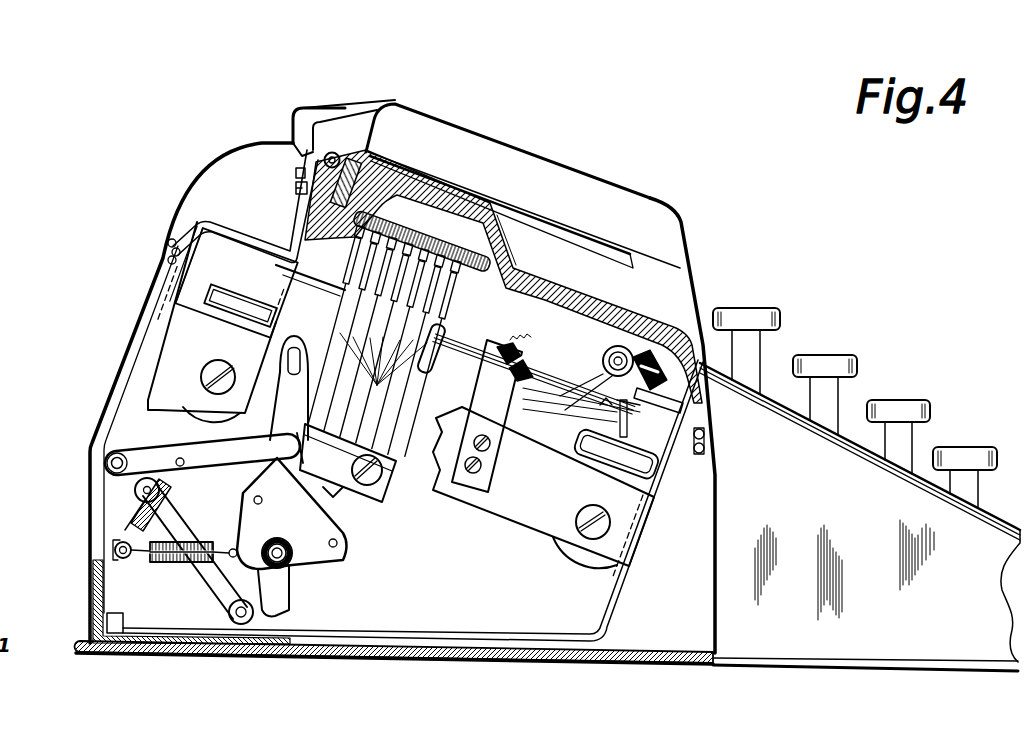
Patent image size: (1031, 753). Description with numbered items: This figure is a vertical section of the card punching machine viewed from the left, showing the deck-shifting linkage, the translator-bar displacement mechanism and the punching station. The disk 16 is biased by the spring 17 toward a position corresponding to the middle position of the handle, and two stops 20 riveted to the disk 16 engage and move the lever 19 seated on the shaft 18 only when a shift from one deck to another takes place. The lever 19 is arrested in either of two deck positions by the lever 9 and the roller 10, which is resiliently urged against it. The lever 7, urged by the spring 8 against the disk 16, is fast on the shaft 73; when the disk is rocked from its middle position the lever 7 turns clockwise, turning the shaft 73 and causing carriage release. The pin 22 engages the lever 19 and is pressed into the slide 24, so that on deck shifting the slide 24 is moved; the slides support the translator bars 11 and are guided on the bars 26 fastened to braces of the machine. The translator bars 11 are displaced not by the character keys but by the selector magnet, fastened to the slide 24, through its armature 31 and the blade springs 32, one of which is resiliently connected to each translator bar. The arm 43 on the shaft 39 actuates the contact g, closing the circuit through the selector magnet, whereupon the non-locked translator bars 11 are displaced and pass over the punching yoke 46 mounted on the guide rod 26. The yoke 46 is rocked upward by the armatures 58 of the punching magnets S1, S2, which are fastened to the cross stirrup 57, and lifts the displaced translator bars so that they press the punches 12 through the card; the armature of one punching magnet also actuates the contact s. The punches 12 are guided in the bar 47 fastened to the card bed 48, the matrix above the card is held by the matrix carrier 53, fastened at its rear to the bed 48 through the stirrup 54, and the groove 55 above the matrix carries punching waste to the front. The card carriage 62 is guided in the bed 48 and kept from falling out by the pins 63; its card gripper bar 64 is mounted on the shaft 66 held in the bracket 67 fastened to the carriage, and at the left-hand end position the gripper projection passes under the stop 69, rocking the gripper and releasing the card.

The lever 7 is at (140, 458).
The spring 8 is at (150, 510).
The lever 9 is at (200, 569).
The roller 10 is at (238, 623).
The translator bars 11 is at (367, 253).
The punches 12 is at (541, 205).
The disk 16 is at (250, 546).
The spring 17 is at (163, 556).
The shaft 18 is at (284, 566).
The lever 19 is at (270, 606).
The stops 20 is at (262, 503).
The pin 22 is at (287, 360).
The slide 24 is at (330, 298).
The guide bars 26 is at (452, 366).
The armature 31 is at (337, 545).
The blade springs 32 is at (377, 386).
The shaft 39 is at (623, 356).
The arm 43 is at (704, 450).
The punching yoke 46 is at (227, 260).
The bar 47 is at (410, 237).
The card bed 48 is at (700, 332).
The matrix carrier 53 is at (660, 240).
The stirrup 54 is at (365, 104).
The groove 55 is at (590, 203).
The cross stirrup 57 is at (207, 330).
The armatures 58 is at (240, 298).
The card carriage 62 is at (320, 197).
The pins 63 is at (375, 170).
The card gripper bar 64 is at (343, 140).
The shaft 66 is at (332, 152).
The bracket 67 is at (327, 167).
The stop 69 is at (306, 128).
The shaft 73 is at (110, 463).
The contact g is at (655, 392).
The contact s is at (608, 403).
The punching magnet S1 is at (200, 407).
The punching magnet S2 is at (578, 553).